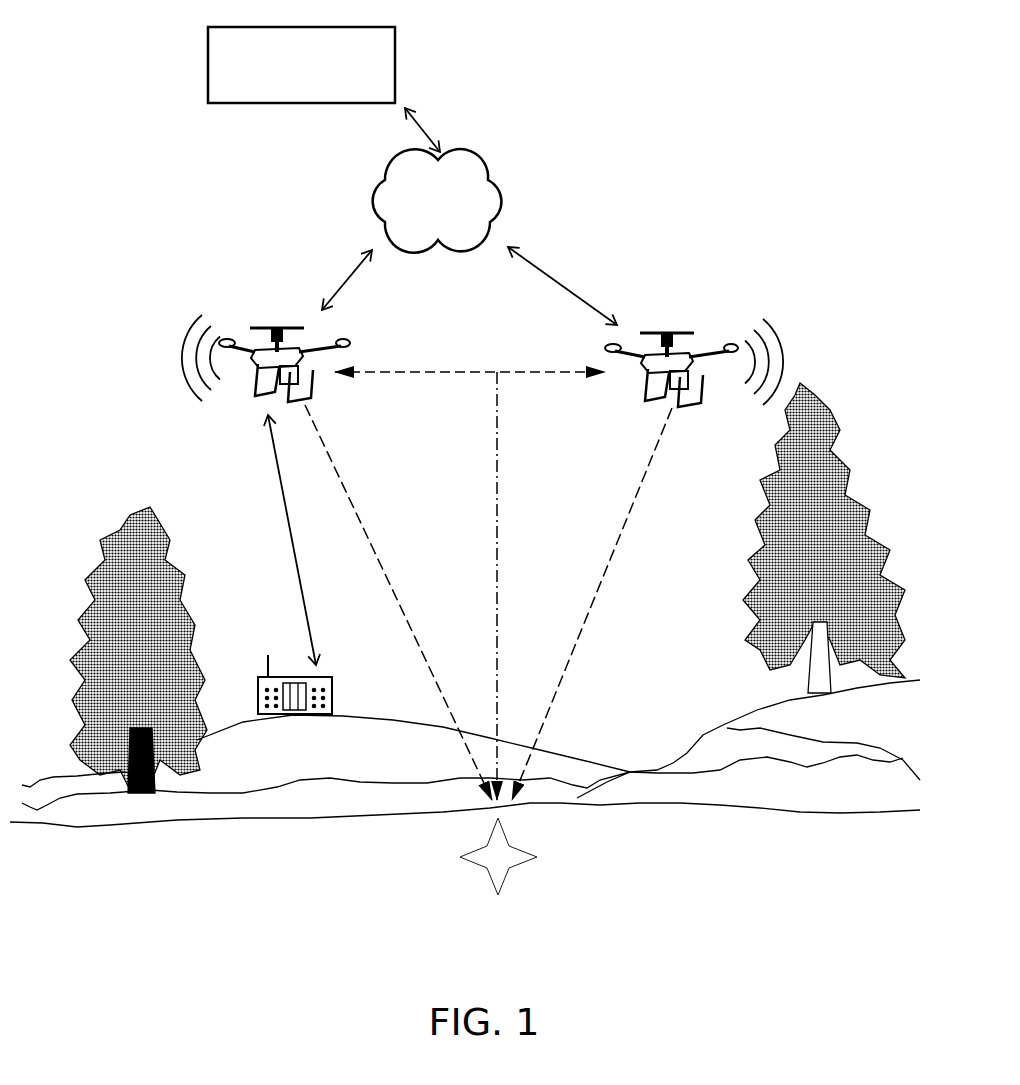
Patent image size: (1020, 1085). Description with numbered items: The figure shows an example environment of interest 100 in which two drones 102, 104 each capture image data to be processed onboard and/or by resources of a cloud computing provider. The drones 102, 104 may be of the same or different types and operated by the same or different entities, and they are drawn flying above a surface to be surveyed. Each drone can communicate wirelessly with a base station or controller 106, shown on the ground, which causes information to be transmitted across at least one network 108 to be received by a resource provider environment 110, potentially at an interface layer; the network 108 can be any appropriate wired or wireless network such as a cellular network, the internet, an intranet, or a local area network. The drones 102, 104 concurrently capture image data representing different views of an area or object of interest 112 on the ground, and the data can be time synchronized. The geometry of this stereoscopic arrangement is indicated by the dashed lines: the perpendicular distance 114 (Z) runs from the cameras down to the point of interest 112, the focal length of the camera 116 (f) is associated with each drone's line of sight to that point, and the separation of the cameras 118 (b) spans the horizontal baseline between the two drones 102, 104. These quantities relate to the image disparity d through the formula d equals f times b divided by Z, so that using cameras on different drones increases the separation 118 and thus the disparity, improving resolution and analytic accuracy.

The example environment of interest 100 is at (740, 76).
The drone 102 is at (270, 325).
The drone 104 is at (692, 353).
The base station or controller 106 is at (292, 677).
The network 108 is at (520, 196).
The resource provider environment 110 is at (208, 58).
The area or object of interest 112 is at (505, 883).
The perpendicular distance 114 is at (518, 576).
The focal length of the camera 116 is at (406, 578).
The separation of the cameras 118 is at (527, 355).